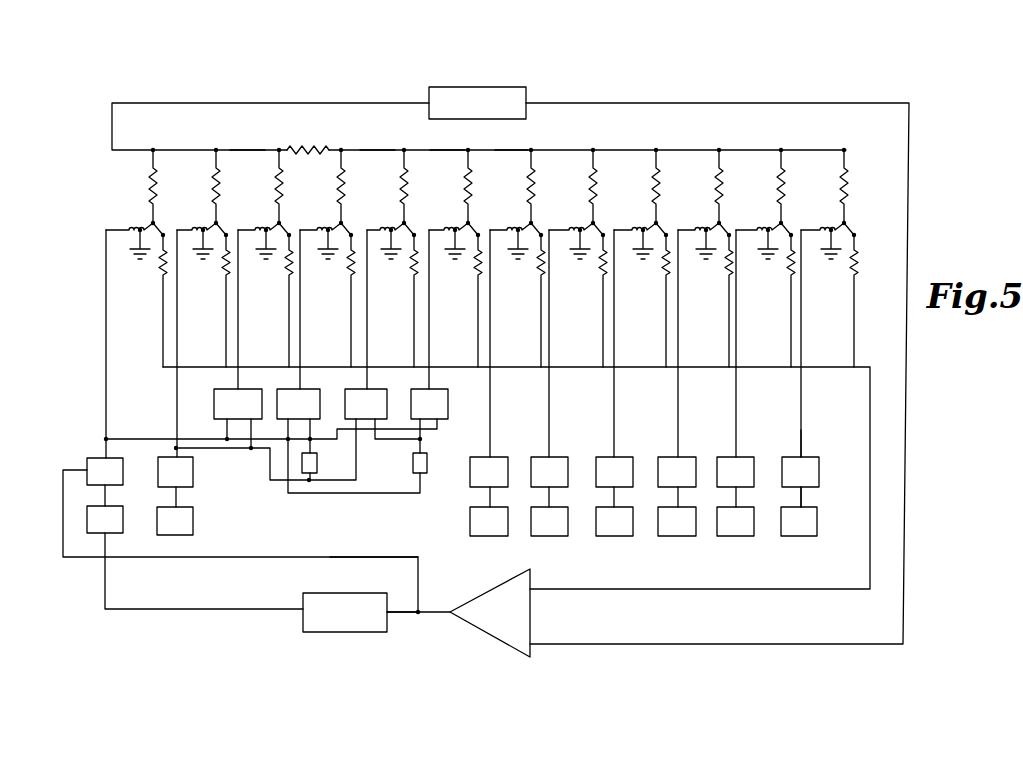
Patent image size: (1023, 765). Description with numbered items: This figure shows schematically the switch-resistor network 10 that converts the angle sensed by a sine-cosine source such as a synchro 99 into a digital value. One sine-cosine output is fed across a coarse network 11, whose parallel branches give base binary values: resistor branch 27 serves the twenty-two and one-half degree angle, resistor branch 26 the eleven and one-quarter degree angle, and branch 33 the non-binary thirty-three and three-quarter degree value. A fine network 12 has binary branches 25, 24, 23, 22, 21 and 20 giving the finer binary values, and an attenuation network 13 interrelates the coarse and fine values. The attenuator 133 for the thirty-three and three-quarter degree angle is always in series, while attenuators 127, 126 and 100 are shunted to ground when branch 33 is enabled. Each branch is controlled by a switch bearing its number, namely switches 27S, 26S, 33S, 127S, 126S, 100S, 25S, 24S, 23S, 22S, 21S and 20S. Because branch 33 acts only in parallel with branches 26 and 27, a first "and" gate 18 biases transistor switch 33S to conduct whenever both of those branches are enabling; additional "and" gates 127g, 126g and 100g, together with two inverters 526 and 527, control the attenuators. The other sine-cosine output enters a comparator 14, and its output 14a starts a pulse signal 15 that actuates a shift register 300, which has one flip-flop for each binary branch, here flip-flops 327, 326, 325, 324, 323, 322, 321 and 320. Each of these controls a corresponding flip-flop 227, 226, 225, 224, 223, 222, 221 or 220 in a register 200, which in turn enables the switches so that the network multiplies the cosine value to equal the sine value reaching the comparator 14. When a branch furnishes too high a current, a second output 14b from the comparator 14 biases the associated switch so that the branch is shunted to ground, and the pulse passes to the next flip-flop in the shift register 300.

The synchro 99 is at (527, 90).
The coarse network 11 is at (247, 150).
The attenuator for the 33¾° angle 133 is at (308, 148).
The attenuation network 13 is at (377, 150).
The switch-resistor network 10 is at (453, 136).
The fine network 12 is at (515, 136).
The resistor branch 27 is at (141, 186).
The resistor branch 26 is at (204, 186).
The branch 33 is at (267, 186).
The attenuator 127 is at (327, 186).
The attenuator 126 is at (390, 186).
The attenuator 100 is at (453, 186).
The branch 25 is at (519, 186).
The branch 24 is at (581, 186).
The branch 23 is at (644, 186).
The branch 22 is at (707, 186).
The branch 21 is at (769, 186).
The branch 20 is at (832, 186).
The switch 27S is at (151, 222).
The switch 26S is at (214, 222).
The switch 33S is at (277, 222).
The switch 127S is at (339, 222).
The switch 126S is at (402, 222).
The switch 100S is at (466, 222).
The switch 25S is at (529, 222).
The switch 24S is at (591, 222).
The switch 23S is at (654, 222).
The switch 22S is at (717, 222).
The switch 21S is at (779, 222).
The switch 20S is at (842, 222).
The first 'and' gate 18 is at (245, 390).
The 'and' gate 127g is at (303, 390).
The 'and' gate 126g is at (370, 390).
The 'and' gate 100g is at (438, 390).
The inverter 526 is at (314, 460).
The inverter 527 is at (426, 460).
The flip-flop 227 is at (88, 460).
The flip-flop 327 is at (117, 533).
The flip-flop 226 is at (193, 470).
The flip-flop 326 is at (185, 535).
The pulse signal 15 is at (383, 632).
The comparator 14 is at (532, 602).
The output 14a is at (402, 604).
The second output 14b is at (374, 550).
The flip-flop 225 is at (499, 457).
The flip-flop 224 is at (560, 457).
The flip-flop 223 is at (625, 457).
The flip-flop 222 is at (689, 457).
The flip-flop 221 is at (750, 457).
The flip-flop 220 is at (816, 457).
The register 200 is at (803, 455).
The shift register 300 is at (811, 511).
The flip-flop 325 is at (500, 536).
The flip-flop 324 is at (554, 536).
The flip-flop 323 is at (619, 536).
The flip-flop 322 is at (683, 536).
The flip-flop 321 is at (744, 536).
The flip-flop 320 is at (805, 536).